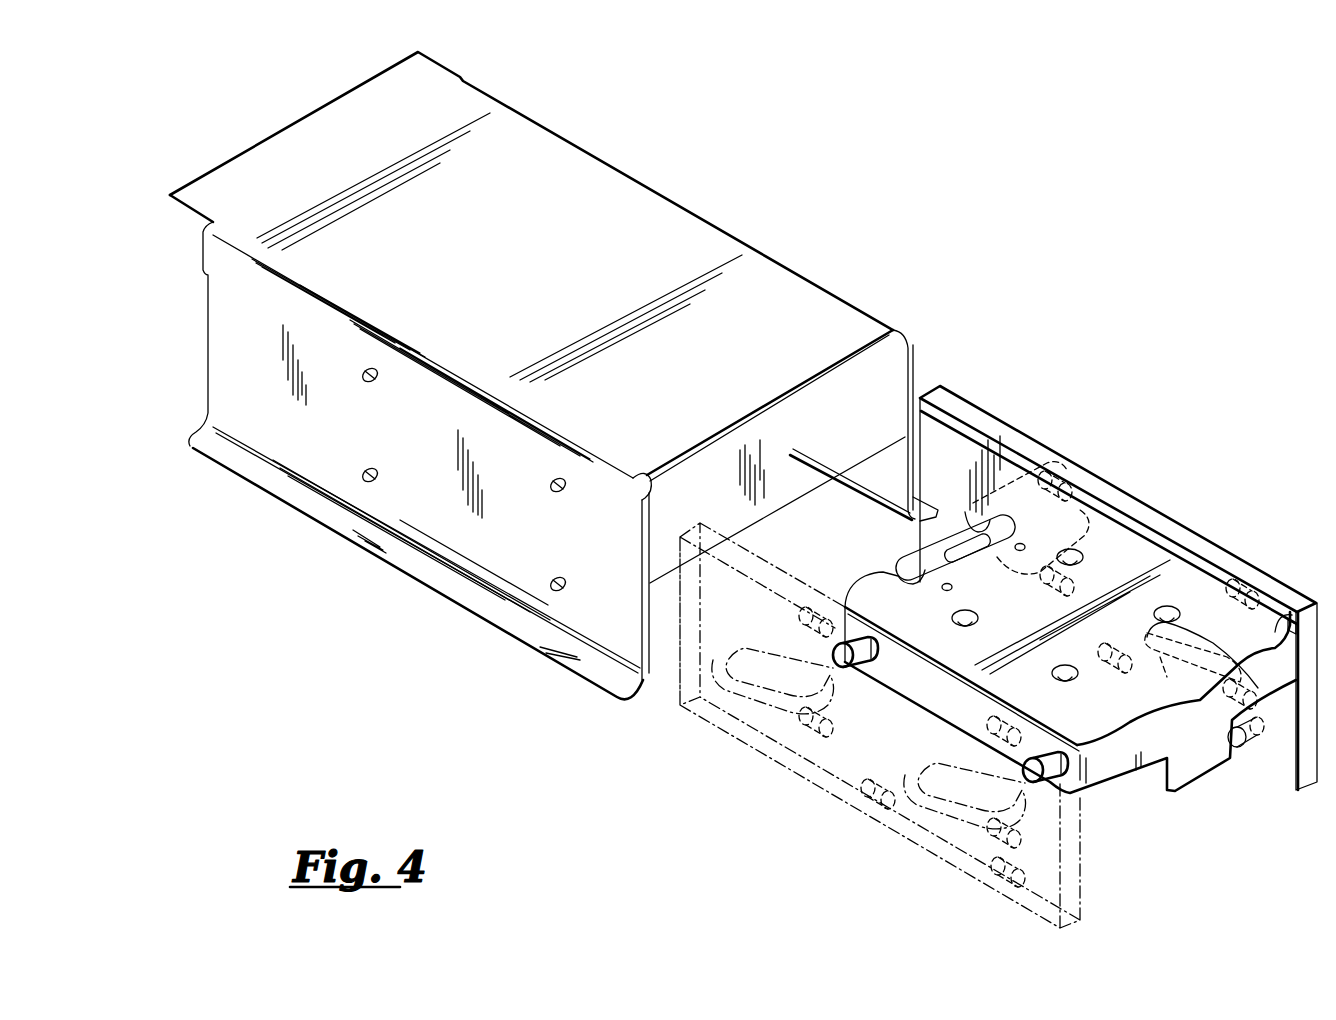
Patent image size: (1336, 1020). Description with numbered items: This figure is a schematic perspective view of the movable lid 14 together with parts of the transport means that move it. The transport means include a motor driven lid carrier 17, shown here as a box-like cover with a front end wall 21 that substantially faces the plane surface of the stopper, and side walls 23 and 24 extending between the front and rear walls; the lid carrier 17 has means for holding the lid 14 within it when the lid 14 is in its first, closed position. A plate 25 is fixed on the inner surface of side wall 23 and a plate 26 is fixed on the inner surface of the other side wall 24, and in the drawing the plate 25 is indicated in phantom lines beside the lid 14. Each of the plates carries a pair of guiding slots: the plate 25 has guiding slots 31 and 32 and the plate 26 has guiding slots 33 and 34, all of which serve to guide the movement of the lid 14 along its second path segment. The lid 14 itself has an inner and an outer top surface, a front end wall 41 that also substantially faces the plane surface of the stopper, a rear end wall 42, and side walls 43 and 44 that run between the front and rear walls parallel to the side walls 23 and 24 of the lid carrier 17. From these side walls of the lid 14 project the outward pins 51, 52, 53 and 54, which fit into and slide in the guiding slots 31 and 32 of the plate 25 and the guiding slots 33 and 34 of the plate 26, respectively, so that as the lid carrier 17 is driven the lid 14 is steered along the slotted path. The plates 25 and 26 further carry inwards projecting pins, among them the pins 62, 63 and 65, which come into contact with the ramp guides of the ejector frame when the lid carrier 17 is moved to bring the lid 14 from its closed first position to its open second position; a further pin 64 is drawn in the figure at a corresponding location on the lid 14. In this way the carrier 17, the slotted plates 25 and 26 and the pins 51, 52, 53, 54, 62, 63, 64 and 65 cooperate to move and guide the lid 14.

The lid 14 is at (1125, 545).
The lid carrier 17 is at (627, 194).
The front end wall 21 is at (790, 490).
The side wall 23 is at (215, 333).
The side wall 24 is at (913, 353).
The plate 25 is at (945, 860).
The plate 26 is at (1260, 762).
The guiding slot 31 is at (748, 723).
The guiding slot 32 is at (922, 805).
The guiding slot 33 is at (1000, 575).
The guiding slot 34 is at (1160, 668).
The front end wall 41 is at (1122, 760).
The rear end wall 42 is at (990, 507).
The side wall 43 is at (950, 707).
The side wall 44 is at (1170, 527).
The outward projecting pin 51 is at (833, 655).
The outward projecting pin 52 is at (1023, 770).
The outward projecting pin 53 is at (1087, 520).
The outward projecting pin 54 is at (1290, 628).
The inwards projecting pin 62 is at (870, 806).
The inwards projecting pin 63 is at (1004, 876).
The standoff 64 is at (1102, 675).
The inwards projecting pin 65 is at (1247, 752).